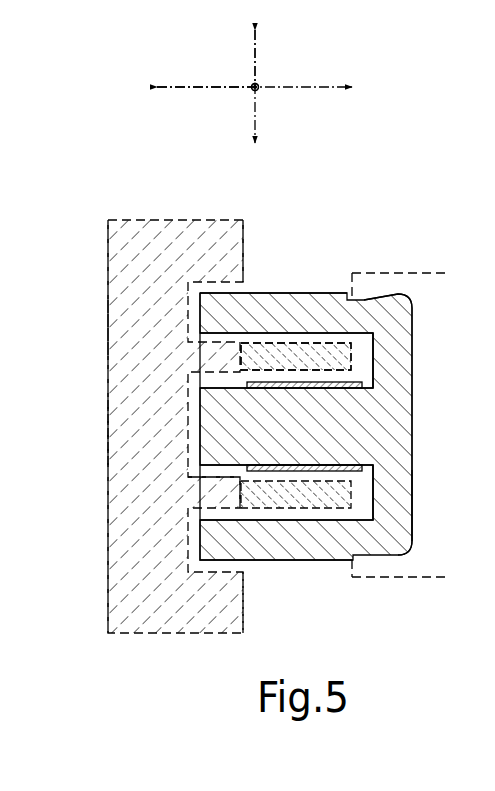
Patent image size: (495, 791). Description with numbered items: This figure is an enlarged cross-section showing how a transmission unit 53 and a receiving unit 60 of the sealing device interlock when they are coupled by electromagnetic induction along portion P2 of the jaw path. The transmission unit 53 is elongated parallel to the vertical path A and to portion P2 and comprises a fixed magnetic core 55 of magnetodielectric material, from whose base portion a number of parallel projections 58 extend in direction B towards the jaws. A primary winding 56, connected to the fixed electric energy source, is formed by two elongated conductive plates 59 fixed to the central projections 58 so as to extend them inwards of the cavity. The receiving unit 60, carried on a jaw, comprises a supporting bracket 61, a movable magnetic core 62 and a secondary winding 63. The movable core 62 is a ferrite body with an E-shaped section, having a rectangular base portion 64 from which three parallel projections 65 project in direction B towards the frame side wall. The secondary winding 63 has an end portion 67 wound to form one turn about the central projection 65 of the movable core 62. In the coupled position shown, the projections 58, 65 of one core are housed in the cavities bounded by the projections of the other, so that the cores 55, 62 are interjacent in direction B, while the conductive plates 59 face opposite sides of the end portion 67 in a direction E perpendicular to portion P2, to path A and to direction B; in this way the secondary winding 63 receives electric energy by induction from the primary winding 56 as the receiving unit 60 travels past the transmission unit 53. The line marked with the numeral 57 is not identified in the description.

The transmission unit 53 is at (97, 282).
The fixed magnetic core 55 is at (158, 246).
The primary winding 56 is at (278, 356).
The carrier wall 57 is at (140, 435).
The projection 58 is at (248, 248).
The conductive plate 59 is at (313, 344).
The receiving unit 60 is at (419, 370).
The supporting bracket 61 is at (384, 437).
The movable magnetic core 62 is at (390, 492).
The secondary winding 63 is at (355, 470).
The base portion 64 is at (390, 337).
The projection 65 is at (238, 316).
The end portion 67 is at (345, 384).
The path A is at (258, 83).
The portion of path P P2 is at (255, 87).
The direction B is at (200, 85).
The direction E is at (253, 74).